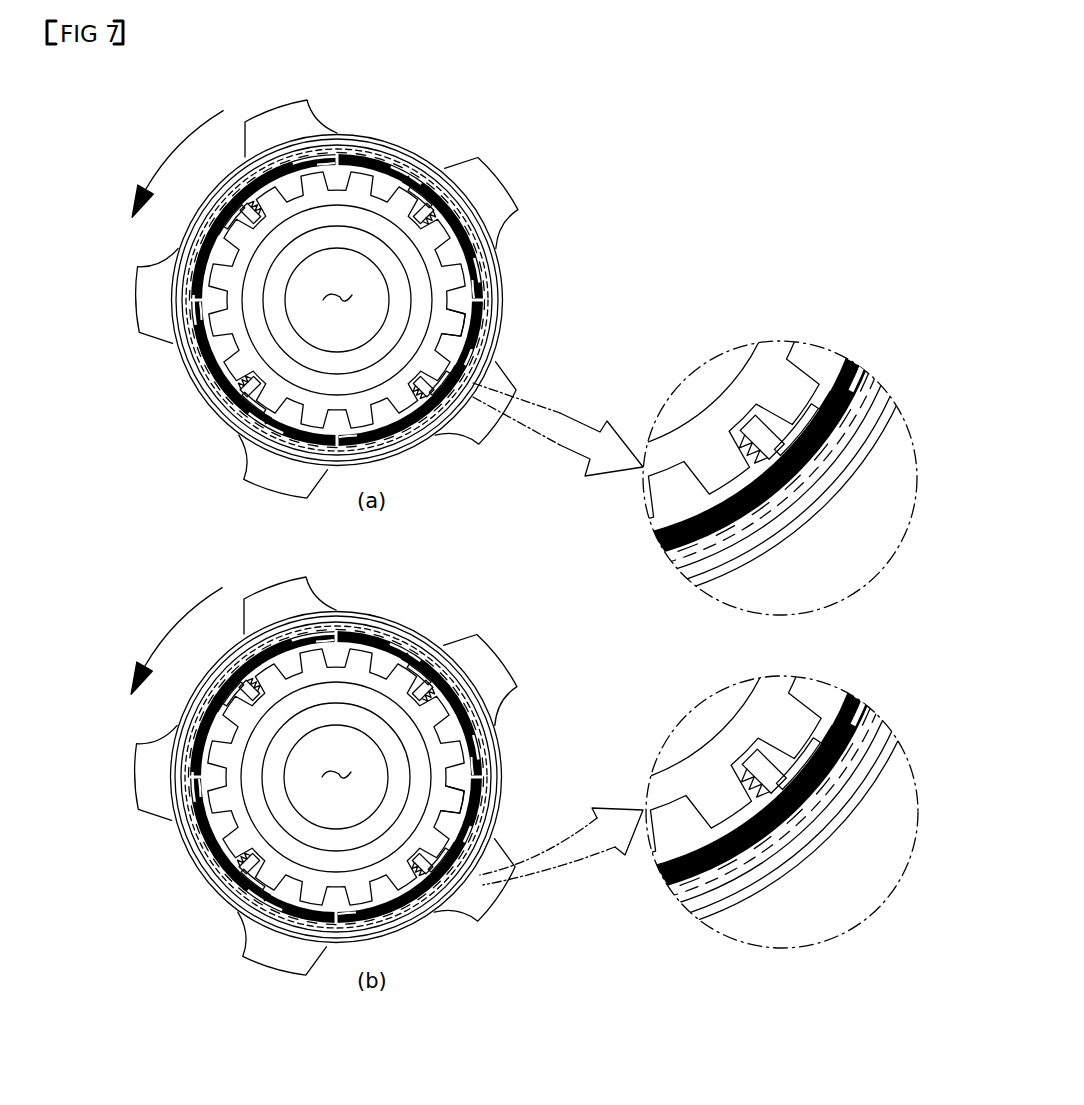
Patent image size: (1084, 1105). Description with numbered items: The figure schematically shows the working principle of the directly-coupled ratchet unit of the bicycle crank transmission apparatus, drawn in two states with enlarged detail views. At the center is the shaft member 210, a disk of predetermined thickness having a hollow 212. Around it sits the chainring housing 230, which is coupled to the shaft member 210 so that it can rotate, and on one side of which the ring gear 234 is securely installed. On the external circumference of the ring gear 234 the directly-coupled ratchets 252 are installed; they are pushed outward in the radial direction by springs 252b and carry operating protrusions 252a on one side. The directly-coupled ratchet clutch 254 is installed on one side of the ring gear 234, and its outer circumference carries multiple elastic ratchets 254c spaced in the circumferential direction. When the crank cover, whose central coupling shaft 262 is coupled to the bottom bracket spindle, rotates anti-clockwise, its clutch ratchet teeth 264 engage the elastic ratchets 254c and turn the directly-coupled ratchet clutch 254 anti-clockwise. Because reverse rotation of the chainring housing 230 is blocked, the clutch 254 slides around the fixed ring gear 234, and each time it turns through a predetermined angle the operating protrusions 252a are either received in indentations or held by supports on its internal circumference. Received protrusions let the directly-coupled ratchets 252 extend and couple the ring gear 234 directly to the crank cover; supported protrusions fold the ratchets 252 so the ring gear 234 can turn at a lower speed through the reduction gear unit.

The shaft member 210 is at (302, 353).
The hollow 212 is at (340, 305).
The chainring housing 230 is at (441, 272).
The ring gear 234 is at (461, 307).
The directly-coupled ratchet 252 is at (848, 448).
The operating protrusion 252a is at (745, 470).
The spring 252b is at (758, 452).
The directly-coupled ratchet clutch 254 is at (853, 368).
The elastic ratchet 254c is at (850, 485).
The coupling shaft 262 is at (813, 507).
The clutch ratchet teeth 264 is at (793, 513).